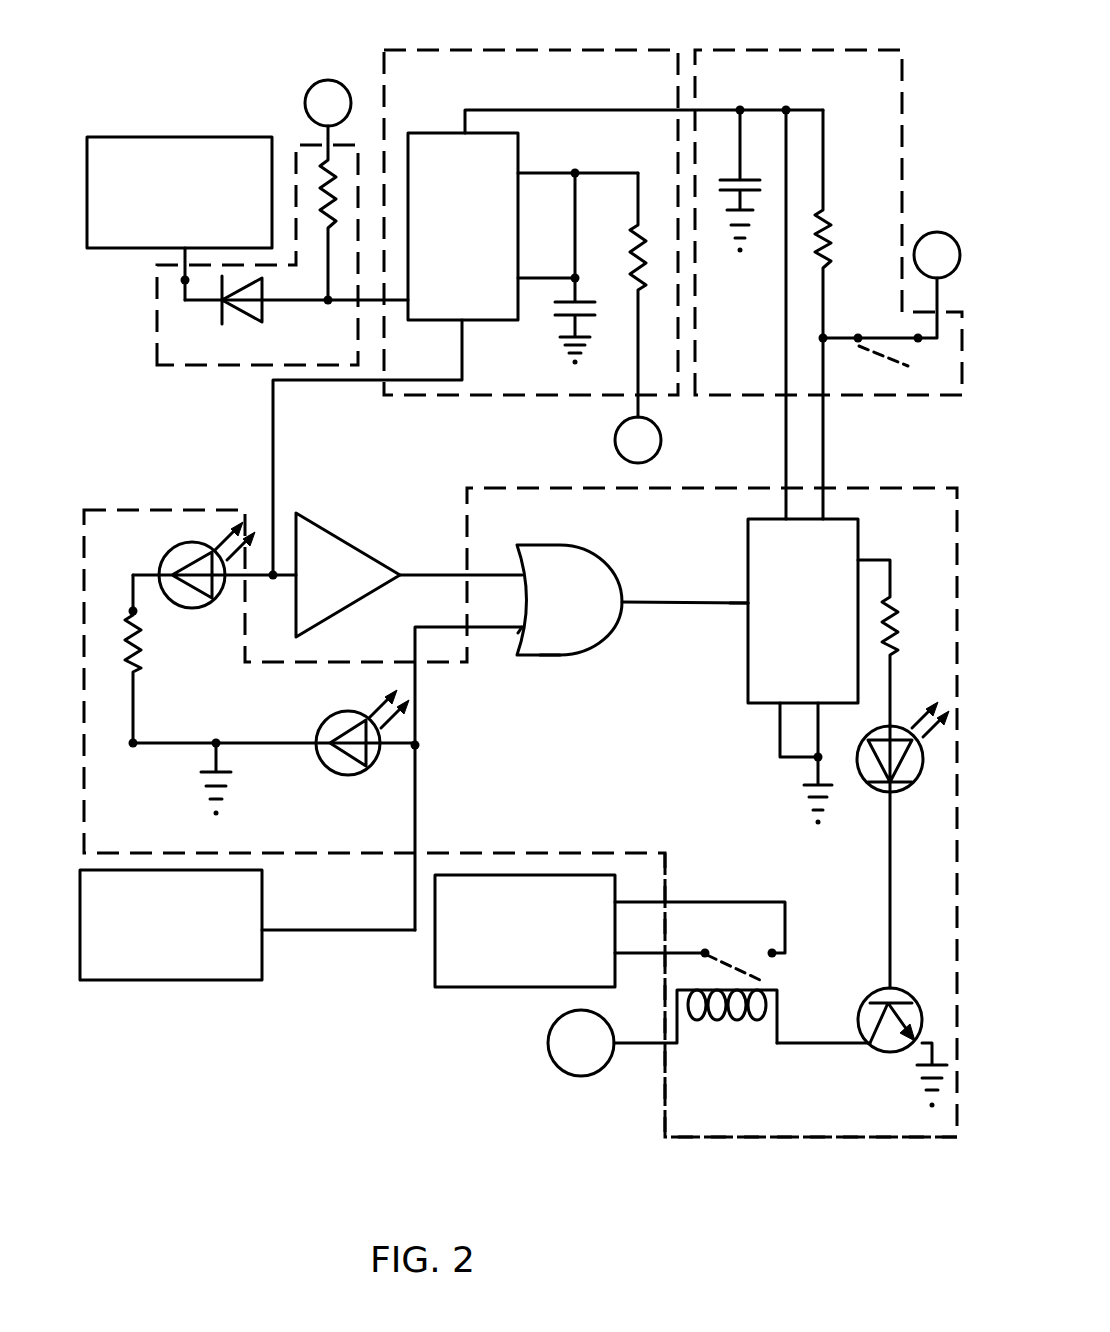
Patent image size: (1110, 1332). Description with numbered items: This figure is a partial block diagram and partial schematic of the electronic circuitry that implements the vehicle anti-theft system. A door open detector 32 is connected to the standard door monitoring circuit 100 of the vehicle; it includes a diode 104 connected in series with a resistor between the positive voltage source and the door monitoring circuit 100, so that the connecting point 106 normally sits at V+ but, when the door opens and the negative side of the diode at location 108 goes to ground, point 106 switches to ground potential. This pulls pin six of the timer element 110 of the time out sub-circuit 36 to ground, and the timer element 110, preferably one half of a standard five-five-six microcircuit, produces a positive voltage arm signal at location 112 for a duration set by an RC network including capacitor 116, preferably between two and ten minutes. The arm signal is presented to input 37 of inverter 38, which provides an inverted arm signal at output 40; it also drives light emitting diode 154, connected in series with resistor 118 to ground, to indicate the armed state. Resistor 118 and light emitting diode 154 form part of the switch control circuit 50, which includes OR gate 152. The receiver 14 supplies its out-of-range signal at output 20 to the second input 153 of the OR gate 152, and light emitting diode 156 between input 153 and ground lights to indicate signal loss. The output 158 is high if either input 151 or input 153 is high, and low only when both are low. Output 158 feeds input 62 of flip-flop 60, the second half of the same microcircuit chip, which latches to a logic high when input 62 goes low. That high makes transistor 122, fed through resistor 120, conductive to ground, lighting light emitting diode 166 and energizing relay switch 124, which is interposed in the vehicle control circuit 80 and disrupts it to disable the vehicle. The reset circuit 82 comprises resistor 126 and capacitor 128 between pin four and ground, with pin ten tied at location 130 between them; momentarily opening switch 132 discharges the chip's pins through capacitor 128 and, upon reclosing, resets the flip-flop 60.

The receiver 14 is at (100, 981).
The out-of-range signal output 20 is at (285, 932).
The door open detector 32 is at (157, 322).
The time out sub-circuit 36 is at (575, 50).
The input of inverter 37 is at (285, 577).
The inverter 38 is at (362, 548).
The output of inverter 40 is at (393, 584).
The switch control circuit 50 is at (732, 1138).
The flip-flop 60 is at (744, 726).
The input of flip-flop 62 is at (748, 615).
The vehicle control circuit 80 is at (515, 988).
The reset circuit 82 is at (795, 50).
The door monitoring circuit 100 is at (172, 137).
The diode 104 is at (259, 320).
The connecting point 106 is at (303, 302).
The location on negative side of diode 108 is at (182, 281).
The timer element 110 is at (503, 133).
The arm signal output location 112 is at (465, 380).
The capacitor 116 is at (558, 318).
The resistor 118 is at (134, 667).
The resistor 120 is at (937, 530).
The transistor 122 is at (888, 988).
The relay switch 124 is at (704, 1048).
The resistor 126 is at (825, 213).
The capacitor 128 is at (730, 190).
The location 130 is at (786, 108).
The momentary switch 132 is at (858, 344).
The input of OR gate 151 is at (517, 572).
The OR gate 152 is at (550, 655).
The second input of OR gate 153 is at (518, 633).
The light emitting diode 154 is at (160, 607).
The light emitting diode 156 is at (357, 776).
The output of OR gate 158 is at (645, 563).
The light emitting diode 166 is at (886, 793).